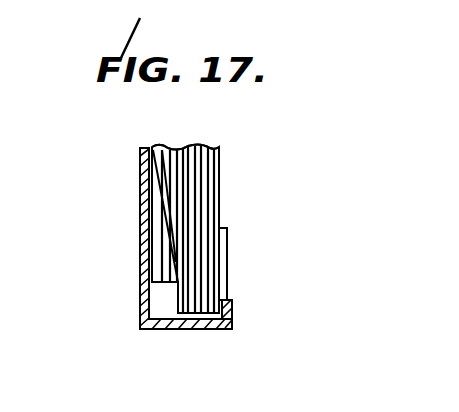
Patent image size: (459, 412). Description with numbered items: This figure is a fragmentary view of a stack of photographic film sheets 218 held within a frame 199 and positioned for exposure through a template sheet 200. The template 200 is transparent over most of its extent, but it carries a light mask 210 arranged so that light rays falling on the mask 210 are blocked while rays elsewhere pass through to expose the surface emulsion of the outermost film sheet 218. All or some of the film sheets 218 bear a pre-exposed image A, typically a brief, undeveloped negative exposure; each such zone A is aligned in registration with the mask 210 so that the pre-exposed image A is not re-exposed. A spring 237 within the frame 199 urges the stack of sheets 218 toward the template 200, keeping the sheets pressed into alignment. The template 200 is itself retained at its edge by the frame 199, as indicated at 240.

The frame 199 is at (138, 327).
The template sheet 200 is at (216, 171).
The light mask 210 is at (227, 233).
The film sheet 218 is at (197, 147).
The spring 237 is at (164, 215).
The edge retention of template 240 is at (232, 306).
The pre-exposed image A is at (193, 282).